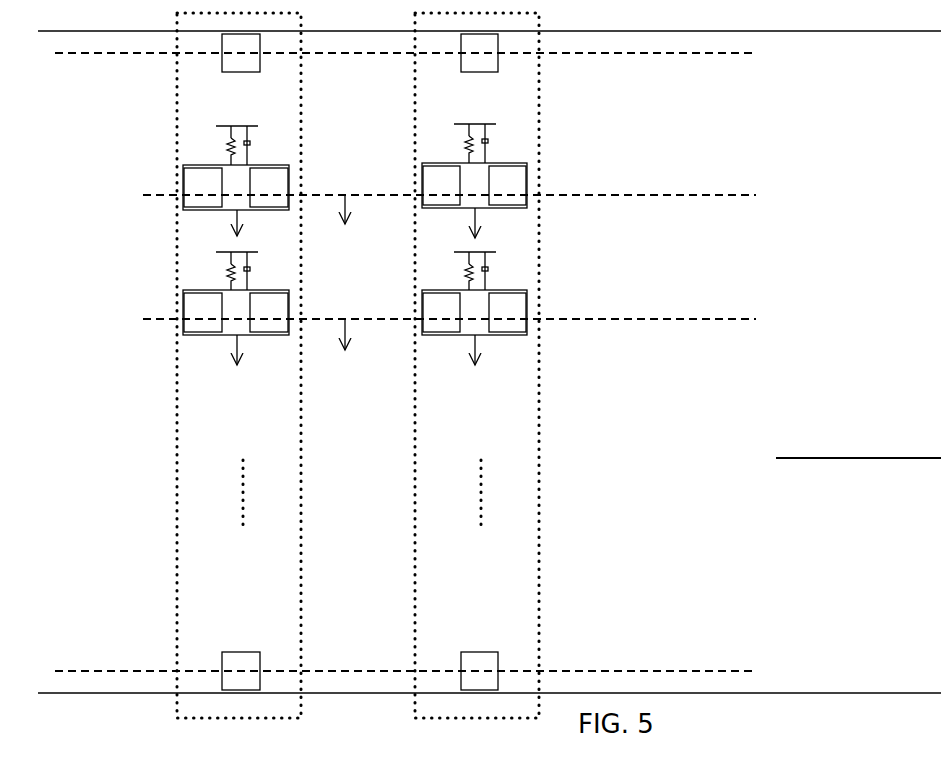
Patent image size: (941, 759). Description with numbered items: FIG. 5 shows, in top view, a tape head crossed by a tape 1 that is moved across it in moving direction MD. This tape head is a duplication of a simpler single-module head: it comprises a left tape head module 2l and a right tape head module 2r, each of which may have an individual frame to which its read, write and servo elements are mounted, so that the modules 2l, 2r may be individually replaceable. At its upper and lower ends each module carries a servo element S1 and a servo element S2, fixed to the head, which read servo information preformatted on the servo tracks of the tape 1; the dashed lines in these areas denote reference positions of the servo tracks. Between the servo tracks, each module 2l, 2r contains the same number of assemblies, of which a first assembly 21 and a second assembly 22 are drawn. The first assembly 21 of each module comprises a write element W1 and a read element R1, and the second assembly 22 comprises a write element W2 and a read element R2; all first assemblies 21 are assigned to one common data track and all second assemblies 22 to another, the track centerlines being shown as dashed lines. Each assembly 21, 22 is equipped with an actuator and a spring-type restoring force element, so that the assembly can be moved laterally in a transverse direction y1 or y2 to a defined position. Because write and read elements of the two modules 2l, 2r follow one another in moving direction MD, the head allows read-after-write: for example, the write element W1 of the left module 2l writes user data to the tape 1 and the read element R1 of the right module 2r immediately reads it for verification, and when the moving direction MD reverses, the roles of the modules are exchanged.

The tape 1 is at (906, 690).
The left tape head module 2l is at (177, 515).
The right tape head module 2r is at (540, 543).
The first assembly 21 is at (396, 210).
The second assembly 22 is at (385, 356).
The servo element S1 is at (222, 53).
The servo element S2 is at (222, 652).
The write element W1 is at (212, 200).
The read element R1 is at (289, 167).
The write element W2 is at (205, 330).
The read element R2 is at (290, 287).
The transverse direction y1 is at (367, 218).
The transverse direction y2 is at (367, 341).
The moving direction MD is at (858, 437).